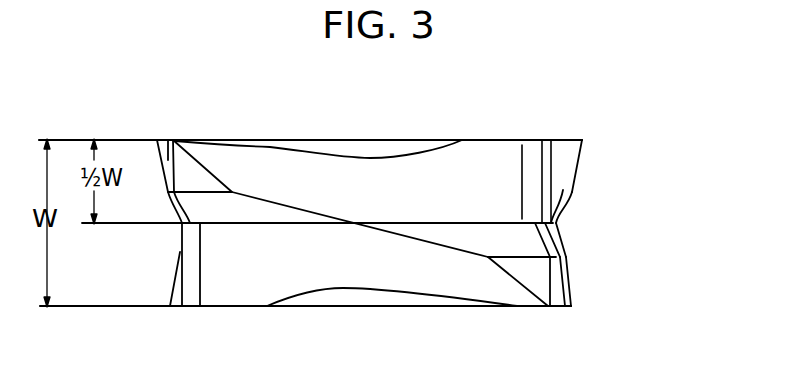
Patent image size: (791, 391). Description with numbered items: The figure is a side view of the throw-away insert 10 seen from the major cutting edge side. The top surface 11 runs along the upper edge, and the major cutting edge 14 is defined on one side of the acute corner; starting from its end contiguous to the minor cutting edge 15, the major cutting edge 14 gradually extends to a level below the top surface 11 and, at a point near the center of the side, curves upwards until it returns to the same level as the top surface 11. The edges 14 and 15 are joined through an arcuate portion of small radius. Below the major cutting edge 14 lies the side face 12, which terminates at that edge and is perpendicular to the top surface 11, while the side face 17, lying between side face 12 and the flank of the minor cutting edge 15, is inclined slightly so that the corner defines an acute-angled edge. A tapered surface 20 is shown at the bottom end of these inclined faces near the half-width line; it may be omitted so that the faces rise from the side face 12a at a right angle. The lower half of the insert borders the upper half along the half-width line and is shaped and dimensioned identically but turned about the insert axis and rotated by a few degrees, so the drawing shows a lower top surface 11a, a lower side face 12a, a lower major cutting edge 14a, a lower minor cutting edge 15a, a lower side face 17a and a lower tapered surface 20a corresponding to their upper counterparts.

The throw-away insert 10 is at (609, 146).
The top surface 11 is at (482, 140).
The side face 12 is at (268, 162).
The major cutting edge 14 is at (315, 152).
The minor cutting edge 15 is at (157, 139).
The side face 17 is at (172, 139).
The tapered surface 20 is at (205, 212).
The top surface of lower half 11a is at (487, 306).
The side face of lower half 12a is at (253, 268).
The major cutting edge of lower half 14a is at (420, 297).
The minor cutting edge of lower half 15a is at (571, 306).
The side face of lower half 17a is at (553, 285).
The tapered surface of lower half 20a is at (528, 240).